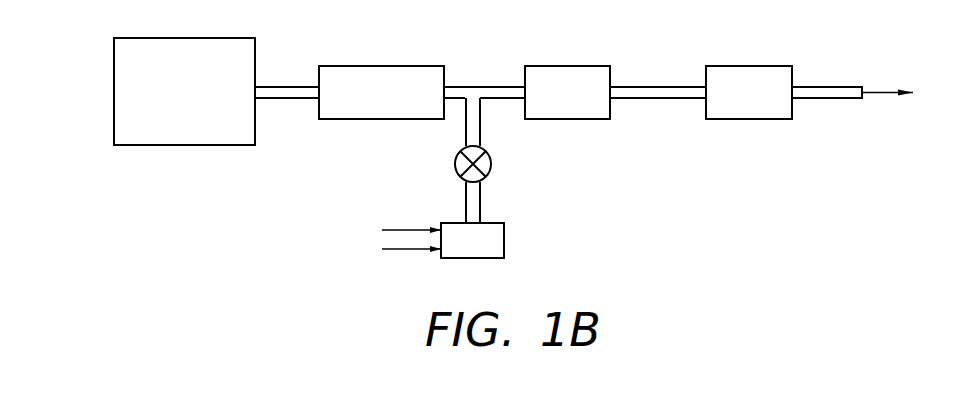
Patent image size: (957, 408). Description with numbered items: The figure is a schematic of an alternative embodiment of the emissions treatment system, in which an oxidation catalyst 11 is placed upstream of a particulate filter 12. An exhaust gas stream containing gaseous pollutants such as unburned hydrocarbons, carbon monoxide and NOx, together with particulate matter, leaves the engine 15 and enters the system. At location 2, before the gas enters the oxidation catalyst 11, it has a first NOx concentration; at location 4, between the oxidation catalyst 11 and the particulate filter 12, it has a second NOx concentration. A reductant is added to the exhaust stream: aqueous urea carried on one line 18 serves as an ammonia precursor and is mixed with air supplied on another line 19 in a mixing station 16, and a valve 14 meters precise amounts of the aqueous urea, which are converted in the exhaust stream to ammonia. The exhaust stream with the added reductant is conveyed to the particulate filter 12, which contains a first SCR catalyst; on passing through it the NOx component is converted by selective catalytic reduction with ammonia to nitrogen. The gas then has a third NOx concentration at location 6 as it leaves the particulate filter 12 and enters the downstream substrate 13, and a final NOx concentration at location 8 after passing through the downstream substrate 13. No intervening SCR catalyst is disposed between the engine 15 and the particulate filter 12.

The location 2 is at (298, 85).
The location 4 is at (473, 85).
The location 6 is at (635, 85).
The location 8 is at (814, 85).
The oxidation catalyst 11 is at (352, 119).
The particulate filter 12 is at (538, 119).
The downstream substrate 13 is at (763, 119).
The valve 14 is at (490, 171).
The engine 15 is at (197, 146).
The mixing station 16 is at (504, 239).
The line 18 is at (412, 251).
The line 19 is at (413, 228).